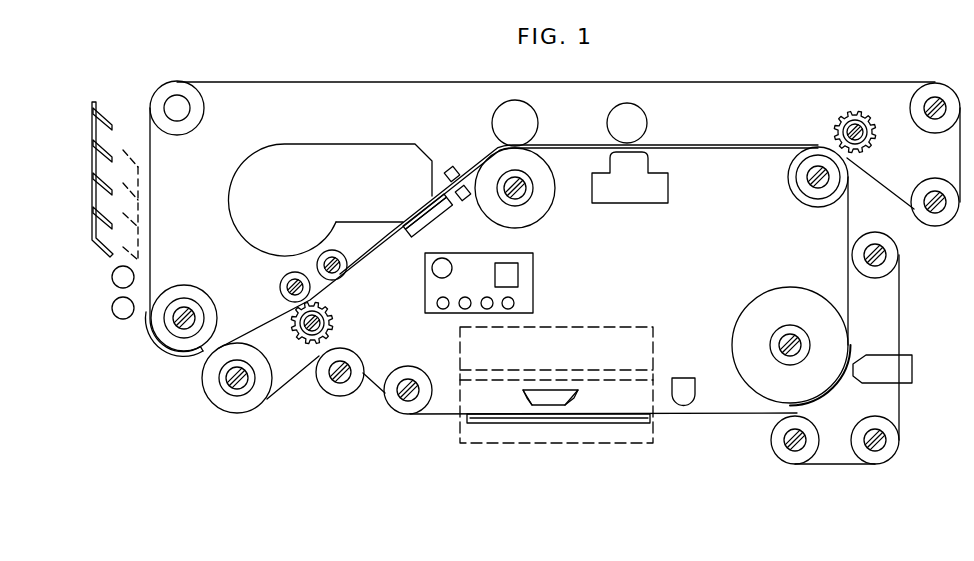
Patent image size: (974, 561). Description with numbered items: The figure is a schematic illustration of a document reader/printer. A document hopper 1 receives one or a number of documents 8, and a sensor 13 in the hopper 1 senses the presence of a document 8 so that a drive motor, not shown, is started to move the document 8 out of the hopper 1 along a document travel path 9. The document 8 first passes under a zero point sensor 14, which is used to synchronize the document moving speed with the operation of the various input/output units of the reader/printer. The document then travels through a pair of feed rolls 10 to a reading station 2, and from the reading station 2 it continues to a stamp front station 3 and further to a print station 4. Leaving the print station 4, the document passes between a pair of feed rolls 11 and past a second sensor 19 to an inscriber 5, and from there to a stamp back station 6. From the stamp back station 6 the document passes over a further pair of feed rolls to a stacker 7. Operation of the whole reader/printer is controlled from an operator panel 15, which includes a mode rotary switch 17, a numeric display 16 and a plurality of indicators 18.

The document hopper 1 is at (653, 437).
The reading station 2 is at (903, 356).
The stamp front station 3 is at (855, 178).
The print station 4 is at (655, 203).
The inscriber 5 is at (321, 208).
The stamp back station 6 is at (334, 295).
The stacker 7 is at (103, 104).
The document 8 is at (465, 417).
The document travel path 9 is at (725, 413).
The pair of feed rolls 10 is at (800, 467).
The pair of feed rolls 11 is at (542, 135).
The sensor 13 is at (578, 395).
The zero point sensor 14 is at (683, 377).
The operator panel 15 is at (536, 240).
The numeric display 16 is at (518, 275).
The mode rotary switch 17 is at (432, 268).
The indicators 18 is at (443, 309).
The second sensor 19 is at (452, 165).